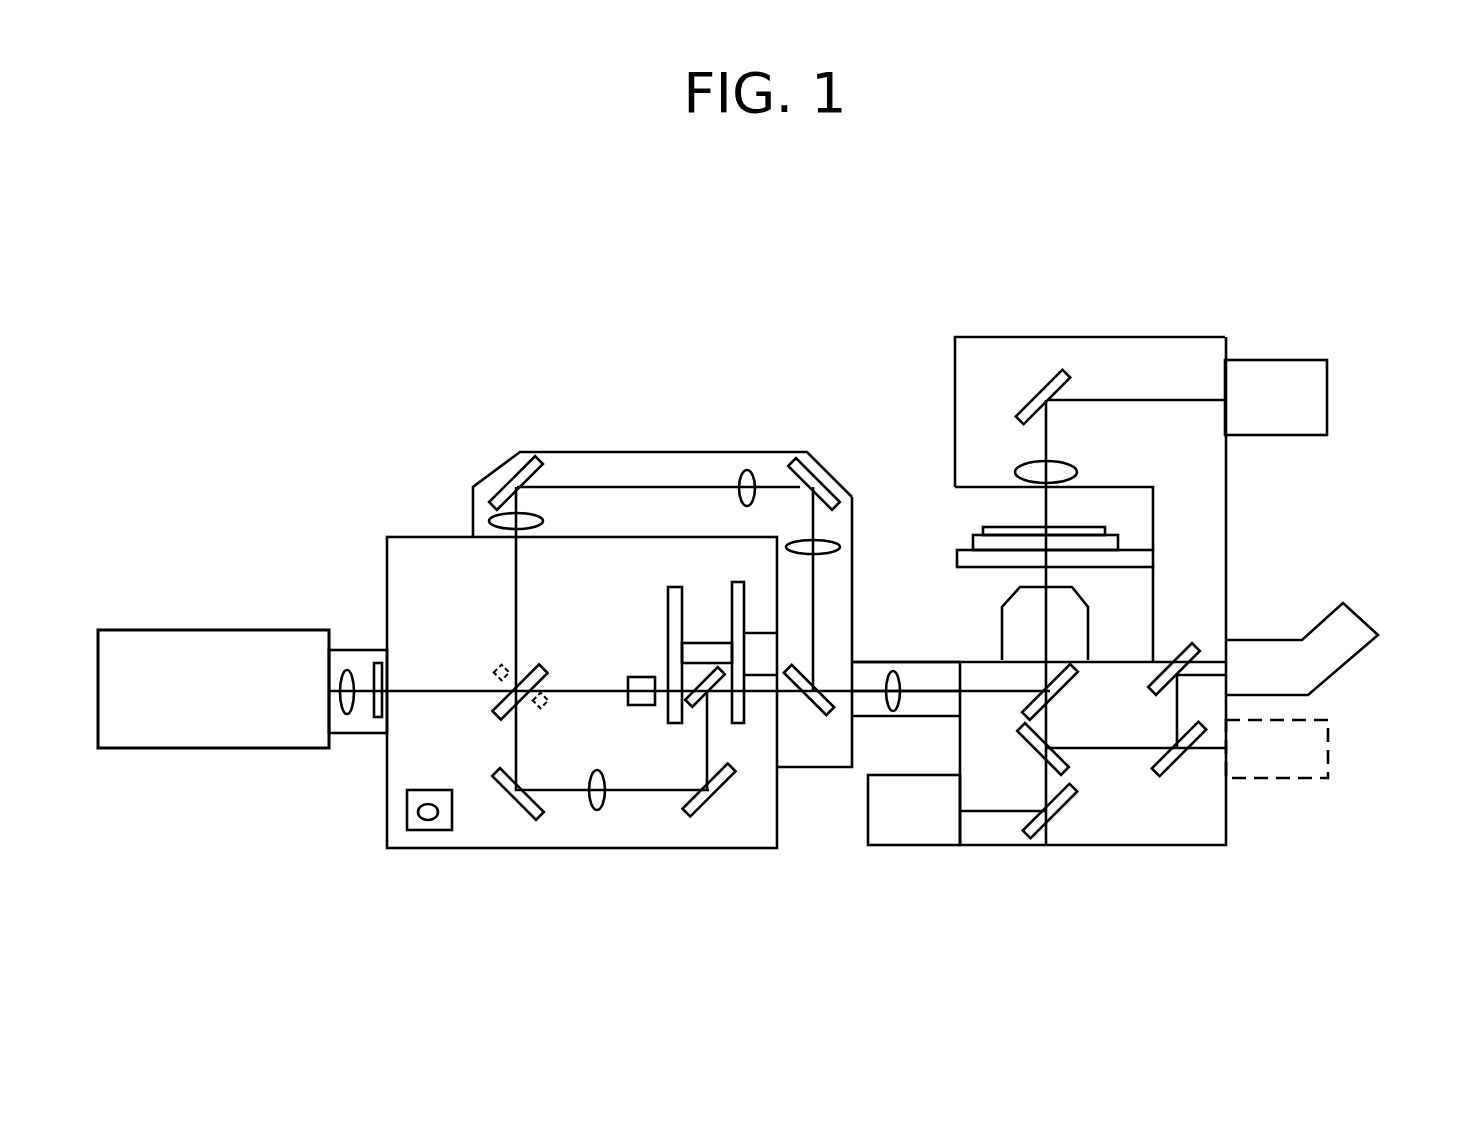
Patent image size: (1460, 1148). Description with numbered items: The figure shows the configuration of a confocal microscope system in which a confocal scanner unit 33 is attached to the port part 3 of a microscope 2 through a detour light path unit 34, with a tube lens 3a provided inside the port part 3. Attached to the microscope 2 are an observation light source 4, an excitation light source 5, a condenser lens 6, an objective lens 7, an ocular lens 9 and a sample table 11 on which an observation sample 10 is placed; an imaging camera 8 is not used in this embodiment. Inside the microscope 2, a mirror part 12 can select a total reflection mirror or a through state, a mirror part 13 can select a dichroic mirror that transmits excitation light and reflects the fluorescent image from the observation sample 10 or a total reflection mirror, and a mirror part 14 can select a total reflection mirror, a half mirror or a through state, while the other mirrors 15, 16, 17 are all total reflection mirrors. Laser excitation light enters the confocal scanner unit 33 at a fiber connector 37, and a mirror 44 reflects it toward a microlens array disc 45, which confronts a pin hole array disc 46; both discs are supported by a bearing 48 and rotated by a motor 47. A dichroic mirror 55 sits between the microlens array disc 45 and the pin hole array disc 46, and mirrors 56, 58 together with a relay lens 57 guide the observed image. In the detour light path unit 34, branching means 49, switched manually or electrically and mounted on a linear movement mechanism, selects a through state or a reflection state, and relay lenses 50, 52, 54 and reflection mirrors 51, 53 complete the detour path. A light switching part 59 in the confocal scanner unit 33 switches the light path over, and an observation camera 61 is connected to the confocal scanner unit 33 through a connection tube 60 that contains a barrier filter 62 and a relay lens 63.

The microscope 2 is at (1084, 196).
The port part 3 is at (863, 661).
The tube lens 3a is at (892, 668).
The observation light source 4 is at (1329, 378).
The excitation light source 5 is at (911, 849).
The condenser lens 6 is at (1022, 463).
The objective lens 7 is at (1090, 610).
The imaging camera 8 is at (1329, 739).
The ocular lens 9 is at (1361, 612).
The observation sample 10 is at (992, 527).
The sample table 11 is at (970, 541).
The mirror part 12 is at (1027, 701).
The mirror part 13 is at (1060, 764).
The mirror part 14 is at (1158, 770).
The mirror 15 is at (1195, 653).
The mirror 16 is at (1028, 392).
The mirror 17 is at (1055, 812).
The confocal scanner unit 33 is at (386, 565).
The detour light path unit 34 is at (531, 451).
The fiber connector 37 is at (422, 824).
The mirror 44 is at (643, 706).
The microlens array disc 45 is at (670, 585).
The pin hole array disc 46 is at (740, 582).
The motor 47 is at (757, 703).
The bearing 48 is at (704, 643).
The branching means 49 is at (832, 708).
The relay lens 50 is at (828, 541).
The reflection mirror 51 is at (815, 463).
The relay lens 52 is at (742, 471).
The reflection mirror 53 is at (500, 468).
The relay lens 54 is at (492, 519).
The dichroic mirror 55 is at (708, 693).
The mirror 56 is at (710, 800).
The relay lens 57 is at (594, 811).
The mirror 58 is at (520, 801).
The light switching part 59 is at (498, 708).
The connection tube 60 is at (354, 650).
The observation camera 61 is at (188, 630).
The barrier filter 62 is at (378, 718).
The relay lens 63 is at (332, 703).